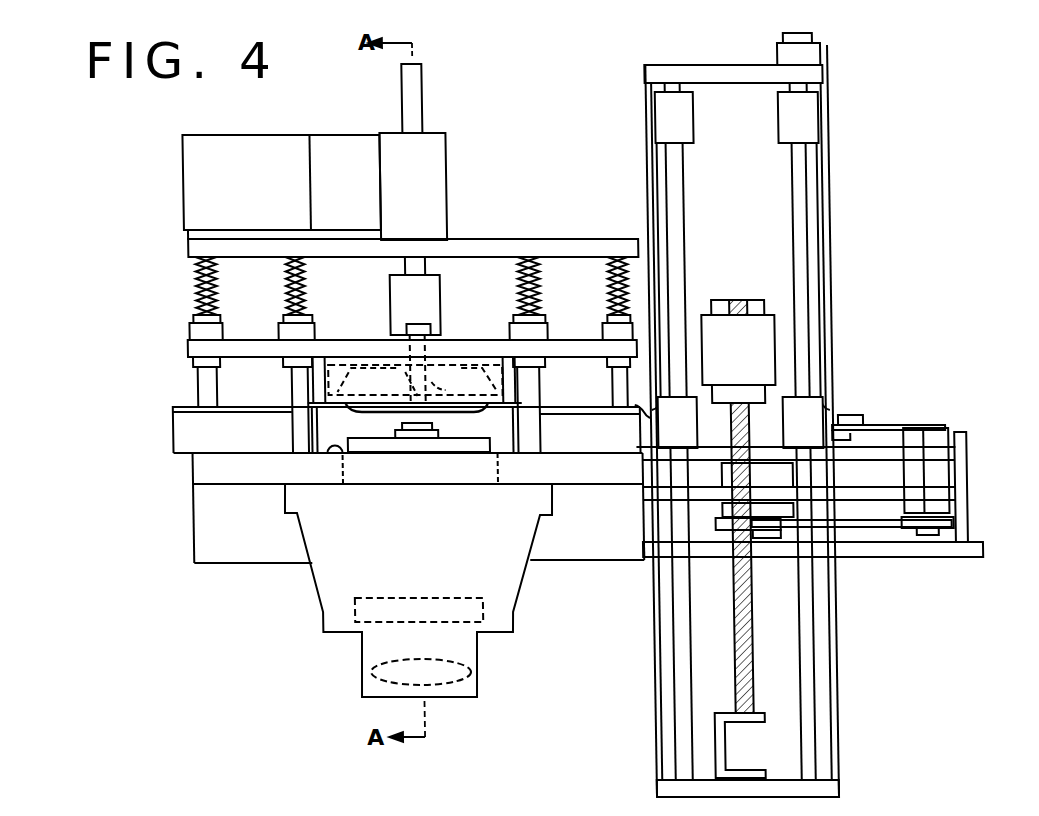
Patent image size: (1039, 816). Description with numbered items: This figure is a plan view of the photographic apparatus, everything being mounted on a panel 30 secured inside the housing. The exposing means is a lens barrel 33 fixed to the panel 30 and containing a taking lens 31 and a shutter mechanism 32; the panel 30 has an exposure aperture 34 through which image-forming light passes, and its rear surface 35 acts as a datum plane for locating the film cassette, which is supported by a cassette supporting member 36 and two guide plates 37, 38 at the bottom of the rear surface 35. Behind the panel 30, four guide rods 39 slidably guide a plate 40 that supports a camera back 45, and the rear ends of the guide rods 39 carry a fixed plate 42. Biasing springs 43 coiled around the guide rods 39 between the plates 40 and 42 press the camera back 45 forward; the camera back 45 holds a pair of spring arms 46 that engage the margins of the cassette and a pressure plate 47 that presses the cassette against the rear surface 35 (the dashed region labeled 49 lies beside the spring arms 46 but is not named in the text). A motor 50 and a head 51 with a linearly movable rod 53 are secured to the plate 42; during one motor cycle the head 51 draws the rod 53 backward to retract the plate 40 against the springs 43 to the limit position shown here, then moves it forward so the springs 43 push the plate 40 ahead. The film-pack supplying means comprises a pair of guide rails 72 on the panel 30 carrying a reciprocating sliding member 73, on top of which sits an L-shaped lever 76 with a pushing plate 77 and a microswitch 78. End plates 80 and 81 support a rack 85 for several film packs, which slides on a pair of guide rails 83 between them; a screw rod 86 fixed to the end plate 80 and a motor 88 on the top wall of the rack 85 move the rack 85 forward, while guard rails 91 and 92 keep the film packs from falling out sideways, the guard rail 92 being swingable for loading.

The panel 30 is at (202, 508).
The taking lens 31 is at (370, 672).
The shutter mechanism 32 is at (352, 612).
The lens barrel 33 is at (320, 573).
The exposure aperture 34 is at (343, 462).
The rear surface 35 is at (327, 455).
The cassette supporting member 36 is at (473, 440).
The guide plate 37 is at (632, 440).
The guide plate 38 is at (248, 438).
The guide rods 39 is at (305, 290).
The plate 40 is at (200, 350).
The plate 42 is at (490, 250).
The biasing springs 43 is at (203, 283).
The camera back 45 is at (445, 378).
The spring arms 46 is at (415, 382).
The pressure plate 47 is at (486, 414).
The funnel section 49 is at (464, 384).
The motor 50 is at (281, 187).
The head 51 is at (436, 153).
The rod 53 is at (417, 92).
The guide rails 72 is at (853, 455).
The sliding member 73 is at (962, 470).
The L-shaped lever 76 is at (918, 430).
The pushing plate 77 is at (872, 428).
The microswitch 78 is at (856, 415).
The end plate 80 is at (822, 786).
The end plate 81 is at (678, 68).
The guide rails 83 is at (678, 225).
The rack 85 is at (780, 172).
The screw rod 86 is at (754, 606).
The motor 88 is at (738, 351).
The guard rail 91 is at (648, 152).
The guard rail 92 is at (834, 324).